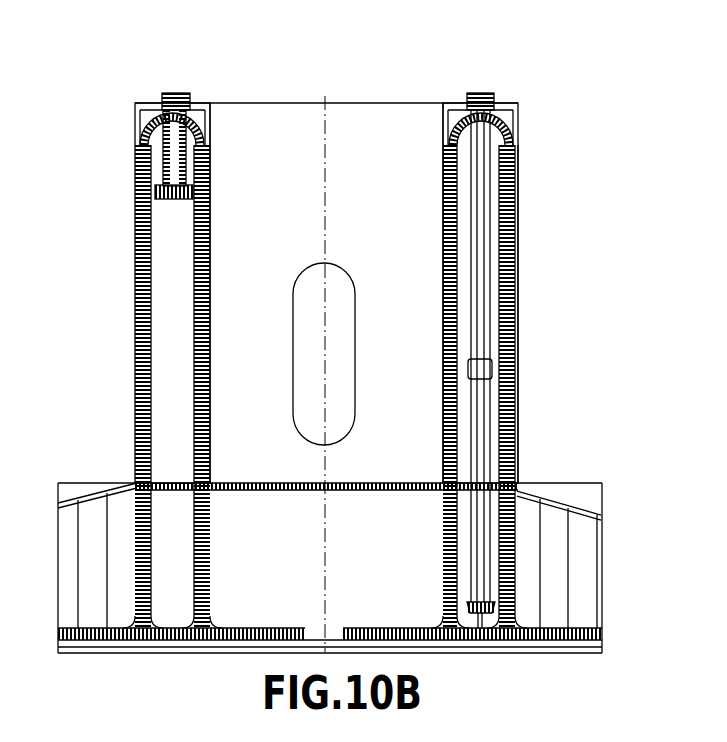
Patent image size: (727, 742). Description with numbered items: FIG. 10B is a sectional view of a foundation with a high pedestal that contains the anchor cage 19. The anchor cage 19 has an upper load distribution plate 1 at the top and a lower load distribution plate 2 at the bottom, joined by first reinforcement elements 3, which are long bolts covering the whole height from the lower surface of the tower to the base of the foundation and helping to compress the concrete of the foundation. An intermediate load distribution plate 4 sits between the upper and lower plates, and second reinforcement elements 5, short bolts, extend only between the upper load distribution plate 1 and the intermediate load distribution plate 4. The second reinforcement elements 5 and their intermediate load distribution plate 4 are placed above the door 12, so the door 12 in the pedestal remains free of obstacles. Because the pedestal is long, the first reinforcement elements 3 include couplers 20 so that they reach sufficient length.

The upper load distribution plate 1 is at (479, 95).
The lower load distribution plate 2 is at (488, 608).
The first reinforcement elements 3 is at (519, 105).
The intermediate load distribution plate 4 is at (166, 193).
The second reinforcement elements 5 is at (206, 105).
The door 12 is at (347, 350).
The anchor cage 19 is at (522, 200).
The couplers 20 is at (492, 369).